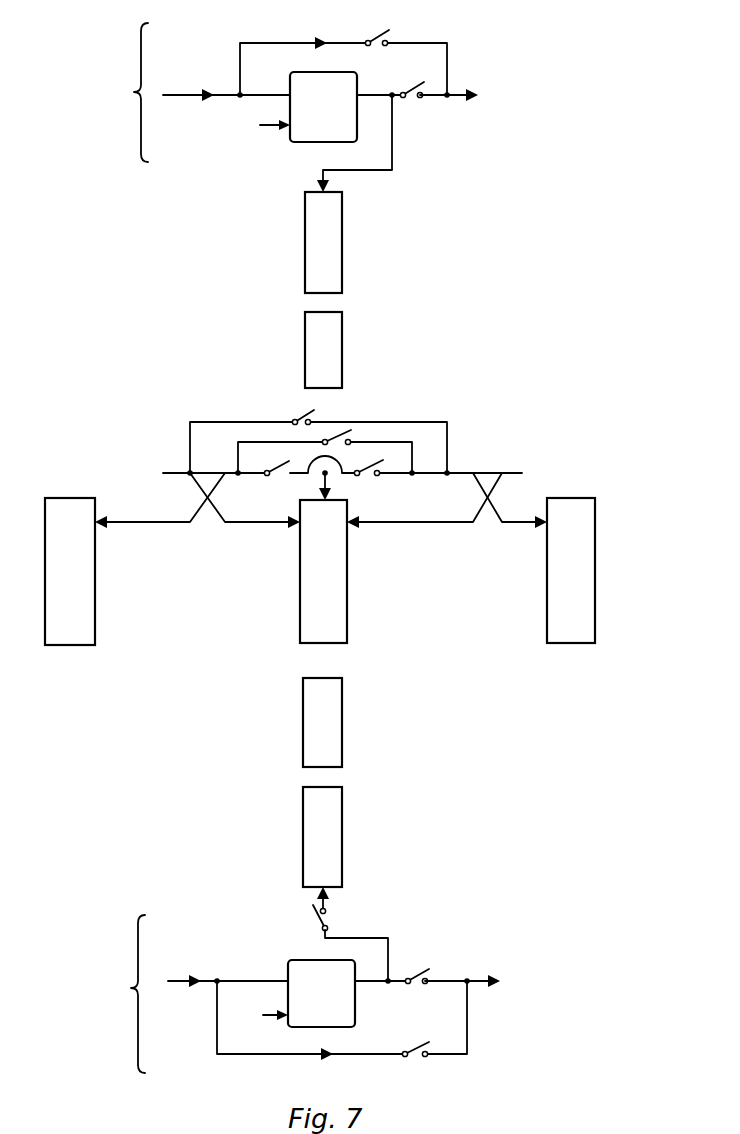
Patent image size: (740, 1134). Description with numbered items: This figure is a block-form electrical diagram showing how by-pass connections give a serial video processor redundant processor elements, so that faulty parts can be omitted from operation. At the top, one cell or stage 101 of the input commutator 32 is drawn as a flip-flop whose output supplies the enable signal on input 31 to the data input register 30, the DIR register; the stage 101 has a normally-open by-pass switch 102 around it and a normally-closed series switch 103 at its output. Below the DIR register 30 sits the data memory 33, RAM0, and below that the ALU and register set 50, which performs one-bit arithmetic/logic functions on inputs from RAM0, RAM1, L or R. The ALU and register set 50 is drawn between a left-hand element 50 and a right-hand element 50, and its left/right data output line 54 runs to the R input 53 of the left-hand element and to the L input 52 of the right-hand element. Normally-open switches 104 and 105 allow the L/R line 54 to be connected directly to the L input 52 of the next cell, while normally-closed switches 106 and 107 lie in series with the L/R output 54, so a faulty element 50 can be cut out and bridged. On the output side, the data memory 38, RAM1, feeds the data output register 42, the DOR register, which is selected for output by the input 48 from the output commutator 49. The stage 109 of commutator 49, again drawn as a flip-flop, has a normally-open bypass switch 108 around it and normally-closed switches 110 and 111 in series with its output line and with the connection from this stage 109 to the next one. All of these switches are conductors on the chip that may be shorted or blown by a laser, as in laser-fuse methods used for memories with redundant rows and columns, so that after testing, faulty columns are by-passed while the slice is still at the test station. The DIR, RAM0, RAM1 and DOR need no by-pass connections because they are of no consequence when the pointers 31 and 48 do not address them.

The input commutator 32 is at (134, 92).
The normally-open by-pass switch 102 is at (395, 39).
The normally-closed series switch 103 is at (414, 106).
The cell or stage of the commutator 101 is at (292, 143).
The enable input 31 is at (393, 172).
The data input register 30 is at (342, 250).
The data memory RAM0 33 is at (342, 343).
The left/right data output line 54 is at (163, 473).
The normally-open switch 104 is at (313, 412).
The normally-open switch 105 is at (350, 433).
The normally-closed switch 106 is at (288, 461).
The normally-closed switch 107 is at (382, 461).
The right data input 53 is at (125, 523).
The left data input 52 is at (260, 523).
The ALU and register set 50 is at (95, 607).
The data memory RAM1 38 is at (342, 715).
The data output register 42 is at (342, 835).
The output select input 48 is at (320, 904).
The normally-closed switch 111 is at (330, 921).
The output commutator 49 is at (131, 988).
The stage of the commutator 109 is at (288, 960).
The normally-closed switch 110 is at (421, 973).
The normally-open bypass switch 108 is at (418, 1057).